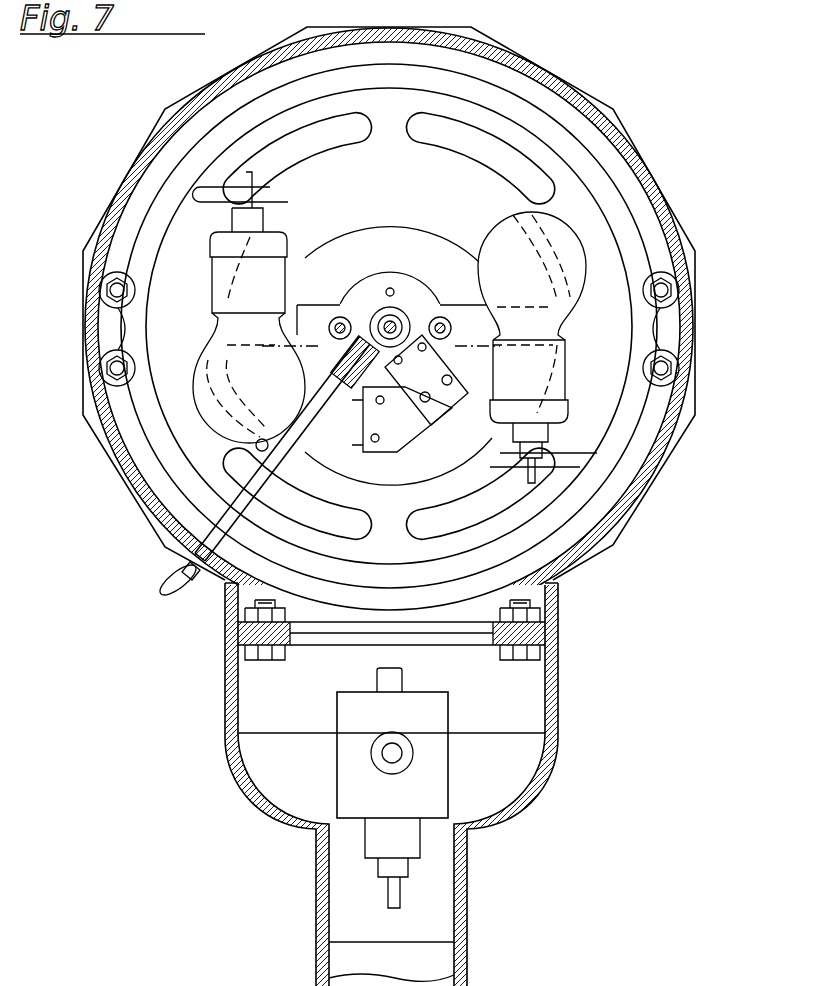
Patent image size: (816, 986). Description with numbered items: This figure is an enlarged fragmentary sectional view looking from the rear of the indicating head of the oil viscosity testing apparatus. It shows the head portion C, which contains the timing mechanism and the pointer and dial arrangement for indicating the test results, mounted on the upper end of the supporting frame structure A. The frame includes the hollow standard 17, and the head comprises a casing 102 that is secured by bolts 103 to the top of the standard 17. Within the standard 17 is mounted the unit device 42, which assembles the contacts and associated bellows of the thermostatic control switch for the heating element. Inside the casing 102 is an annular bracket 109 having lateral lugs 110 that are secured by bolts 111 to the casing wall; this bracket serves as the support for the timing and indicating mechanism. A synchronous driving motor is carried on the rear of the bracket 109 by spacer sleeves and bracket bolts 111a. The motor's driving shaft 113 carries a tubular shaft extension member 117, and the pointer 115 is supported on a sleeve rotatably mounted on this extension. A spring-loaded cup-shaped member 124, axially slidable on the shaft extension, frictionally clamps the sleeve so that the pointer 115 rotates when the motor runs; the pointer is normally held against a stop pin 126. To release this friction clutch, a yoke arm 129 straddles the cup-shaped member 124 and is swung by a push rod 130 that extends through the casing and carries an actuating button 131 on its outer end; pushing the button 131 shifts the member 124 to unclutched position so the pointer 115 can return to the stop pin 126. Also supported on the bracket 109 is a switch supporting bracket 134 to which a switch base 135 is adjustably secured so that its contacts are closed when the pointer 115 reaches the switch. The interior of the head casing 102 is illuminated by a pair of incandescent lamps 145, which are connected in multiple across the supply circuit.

The hollow standard 17 is at (472, 866).
The thermostatic switch unit device 42 is at (410, 725).
The casing 102 is at (555, 600).
The bolts 103 is at (268, 658).
The annular bracket 109 is at (565, 165).
The lateral lugs 110 is at (635, 328).
The bolts 111 is at (676, 288).
The bracket bolts 111a is at (329, 327).
The driving shaft 113 is at (431, 298).
The pointer 115 is at (340, 385).
The shaft extension member 117 is at (390, 322).
The cup-shaped member 124 is at (384, 318).
The stop pin 126 is at (264, 452).
The yoke arm 129 is at (350, 360).
The push rod 130 is at (276, 470).
The actuating button 131 is at (175, 568).
The switch supporting bracket 134 is at (447, 370).
The switch base 135 is at (403, 427).
The incandescent lamps 145 is at (270, 335).
The supporting frame structure A is at (300, 842).
The head portion C is at (105, 476).